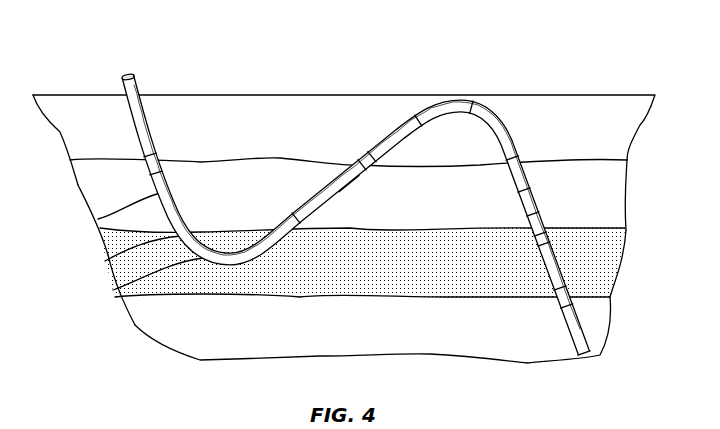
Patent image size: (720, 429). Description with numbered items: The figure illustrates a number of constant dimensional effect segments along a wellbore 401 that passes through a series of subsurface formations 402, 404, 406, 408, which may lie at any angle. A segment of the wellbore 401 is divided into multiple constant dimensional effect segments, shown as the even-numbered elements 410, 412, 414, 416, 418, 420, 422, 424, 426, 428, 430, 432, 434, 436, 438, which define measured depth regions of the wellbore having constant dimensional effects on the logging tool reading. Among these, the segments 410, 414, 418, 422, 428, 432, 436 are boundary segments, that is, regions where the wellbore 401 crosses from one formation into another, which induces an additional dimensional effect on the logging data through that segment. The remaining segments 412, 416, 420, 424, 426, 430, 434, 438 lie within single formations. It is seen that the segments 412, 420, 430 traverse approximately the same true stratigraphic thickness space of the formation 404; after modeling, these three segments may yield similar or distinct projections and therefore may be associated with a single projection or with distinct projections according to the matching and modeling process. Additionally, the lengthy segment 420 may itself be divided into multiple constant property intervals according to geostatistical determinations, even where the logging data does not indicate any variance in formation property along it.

The wellbore 401 is at (123, 74).
The formation 402 is at (637, 124).
The formation 404 is at (617, 188).
The formation 406 is at (610, 262).
The formation 408 is at (597, 323).
The constant dimensional effect segment 410 is at (144, 155).
The constant dimensional effect segment 412 is at (98, 219).
The constant dimensional effect segment 414 is at (105, 261).
The constant dimensional effect segment 416 is at (113, 290).
The constant dimensional effect segment 418 is at (302, 222).
The constant dimensional effect segment 420 is at (355, 178).
The constant dimensional effect segment 422 is at (363, 153).
The constant dimensional effect segment 424 is at (414, 116).
The constant dimensional effect segment 426 is at (481, 109).
The constant dimensional effect segment 428 is at (518, 157).
The constant dimensional effect segment 430 is at (530, 189).
The constant dimensional effect segment 432 is at (539, 213).
The constant dimensional effect segment 434 is at (554, 235).
The constant dimensional effect segment 436 is at (554, 290).
The constant dimensional effect segment 438 is at (563, 318).